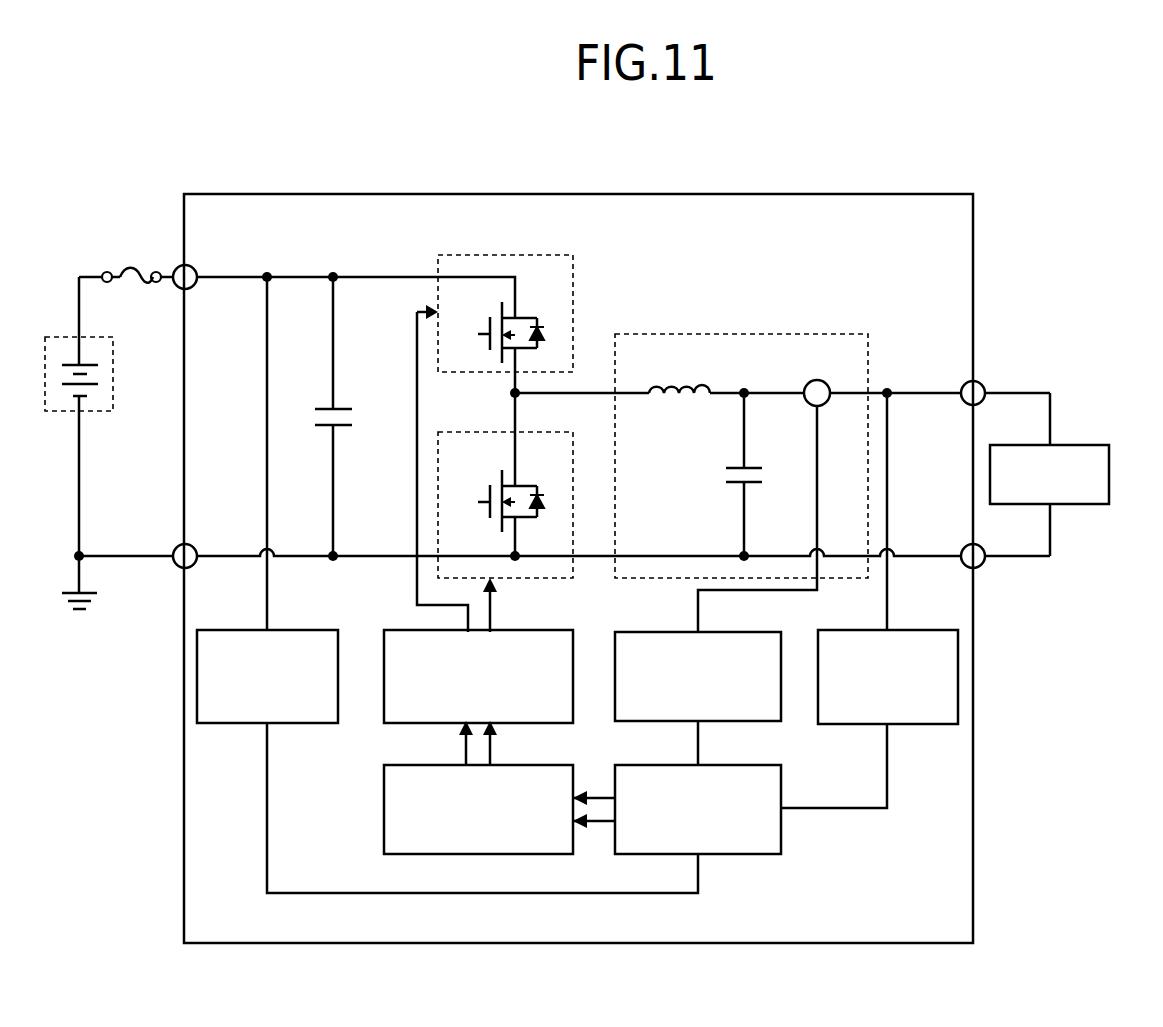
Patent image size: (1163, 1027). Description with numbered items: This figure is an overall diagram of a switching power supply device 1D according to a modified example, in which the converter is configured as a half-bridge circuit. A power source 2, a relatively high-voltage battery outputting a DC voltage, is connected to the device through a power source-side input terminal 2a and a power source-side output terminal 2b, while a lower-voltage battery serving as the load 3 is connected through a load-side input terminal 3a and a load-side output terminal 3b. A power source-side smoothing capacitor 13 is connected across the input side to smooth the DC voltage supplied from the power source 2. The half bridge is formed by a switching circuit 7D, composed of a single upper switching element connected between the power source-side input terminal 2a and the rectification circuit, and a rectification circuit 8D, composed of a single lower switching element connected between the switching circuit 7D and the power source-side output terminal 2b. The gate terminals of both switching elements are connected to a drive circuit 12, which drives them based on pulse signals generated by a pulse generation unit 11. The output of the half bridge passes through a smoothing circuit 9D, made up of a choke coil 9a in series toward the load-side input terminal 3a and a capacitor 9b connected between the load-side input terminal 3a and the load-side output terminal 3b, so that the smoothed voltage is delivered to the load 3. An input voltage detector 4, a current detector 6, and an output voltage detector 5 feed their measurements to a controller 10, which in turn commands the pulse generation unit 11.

The switching power supply device 1D is at (765, 194).
The power source 2 is at (60, 336).
The power source-side input terminal 2a is at (176, 270).
The power source-side output terminal 2b is at (176, 566).
The load 3 is at (1072, 445).
The load-side input terminal 3a is at (981, 383).
The load-side output terminal 3b is at (981, 566).
The input voltage detector 4 is at (308, 630).
The output voltage detector 5 is at (905, 630).
The current detector 6 is at (732, 632).
The switching circuit 7D is at (490, 253).
The rectification circuit 8D is at (573, 572).
The smoothing circuit 9D is at (690, 334).
The choke coil 9a is at (668, 385).
The capacitor 9b is at (752, 466).
The controller 10 is at (781, 785).
The pulse generation unit 11 is at (384, 813).
The drive circuit 12 is at (532, 630).
The power source-side smoothing capacitor 13 is at (345, 407).